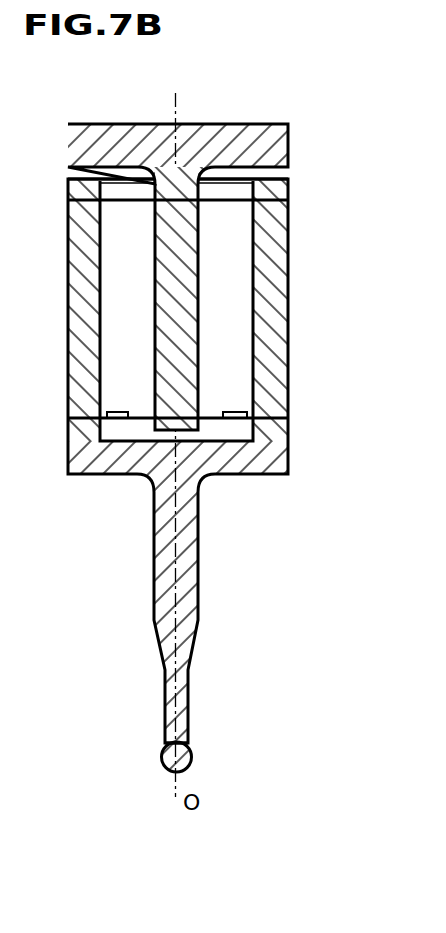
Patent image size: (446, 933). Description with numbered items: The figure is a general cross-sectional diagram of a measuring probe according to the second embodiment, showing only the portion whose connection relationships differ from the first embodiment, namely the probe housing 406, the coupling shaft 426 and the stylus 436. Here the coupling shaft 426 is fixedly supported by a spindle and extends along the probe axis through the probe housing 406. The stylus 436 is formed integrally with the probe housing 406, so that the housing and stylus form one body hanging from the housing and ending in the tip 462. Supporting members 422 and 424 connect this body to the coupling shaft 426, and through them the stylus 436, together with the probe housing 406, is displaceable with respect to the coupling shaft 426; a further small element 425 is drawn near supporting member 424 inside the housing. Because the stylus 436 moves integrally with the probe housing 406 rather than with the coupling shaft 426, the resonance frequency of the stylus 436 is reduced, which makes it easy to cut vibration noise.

The probe housing 406 is at (270, 310).
The supporting member 422 is at (243, 179).
The supporting member 424 is at (201, 414).
The pad 425 is at (105, 414).
The coupling shaft 426 is at (175, 292).
The stylus 436 is at (236, 589).
The ball tip 462 is at (190, 753).